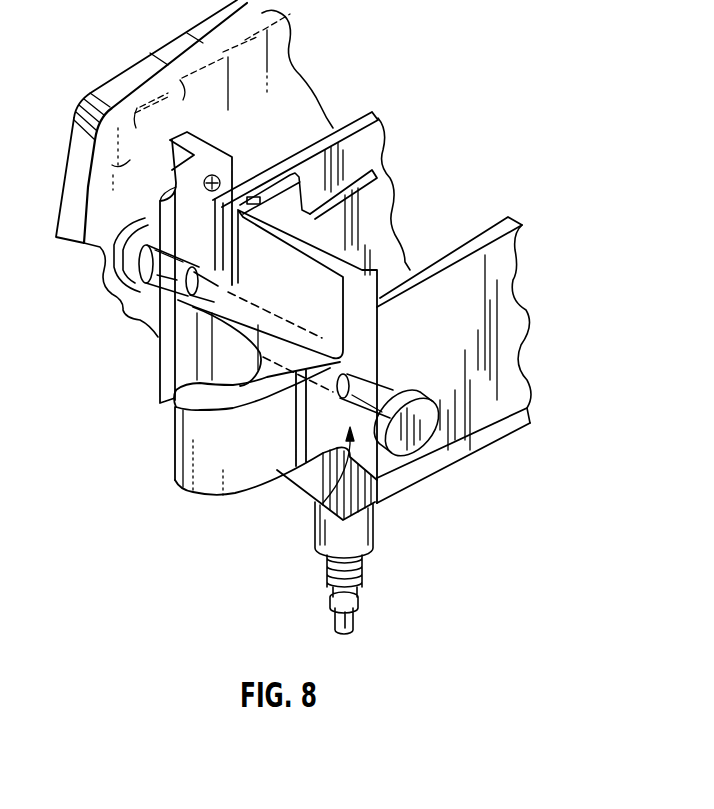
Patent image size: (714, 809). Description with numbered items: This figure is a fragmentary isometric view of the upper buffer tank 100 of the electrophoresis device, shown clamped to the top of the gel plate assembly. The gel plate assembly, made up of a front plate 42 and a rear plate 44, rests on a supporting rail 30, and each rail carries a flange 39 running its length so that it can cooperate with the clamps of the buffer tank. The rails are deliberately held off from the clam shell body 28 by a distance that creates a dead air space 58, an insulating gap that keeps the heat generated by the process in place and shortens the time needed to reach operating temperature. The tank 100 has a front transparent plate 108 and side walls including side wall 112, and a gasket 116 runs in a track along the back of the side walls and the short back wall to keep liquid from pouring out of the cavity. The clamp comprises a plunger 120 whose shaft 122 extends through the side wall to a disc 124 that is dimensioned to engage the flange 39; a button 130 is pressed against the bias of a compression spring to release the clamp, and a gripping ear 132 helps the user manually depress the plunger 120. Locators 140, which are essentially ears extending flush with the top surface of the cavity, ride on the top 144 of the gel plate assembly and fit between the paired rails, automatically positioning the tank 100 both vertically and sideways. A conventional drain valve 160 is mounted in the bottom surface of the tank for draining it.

The clam shell body 28 is at (287, 50).
The dead air space 58 is at (305, 117).
The supporting rail 30 is at (183, 127).
The locator 140 is at (233, 190).
The flange 39 is at (157, 201).
The top of gel plate assembly 144 is at (270, 187).
The rear plate 44 is at (380, 148).
The front plate 42 is at (370, 213).
The side wall 112 is at (367, 247).
The front transparent plate 108 is at (515, 272).
The disc 124 is at (114, 266).
The gasket 116 is at (260, 205).
The plunger 120 is at (313, 503).
The gripping ear 132 is at (193, 473).
The shaft 122 is at (350, 393).
The button 130 is at (435, 426).
The buffer tank 100 is at (523, 445).
The drain valve 160 is at (372, 537).